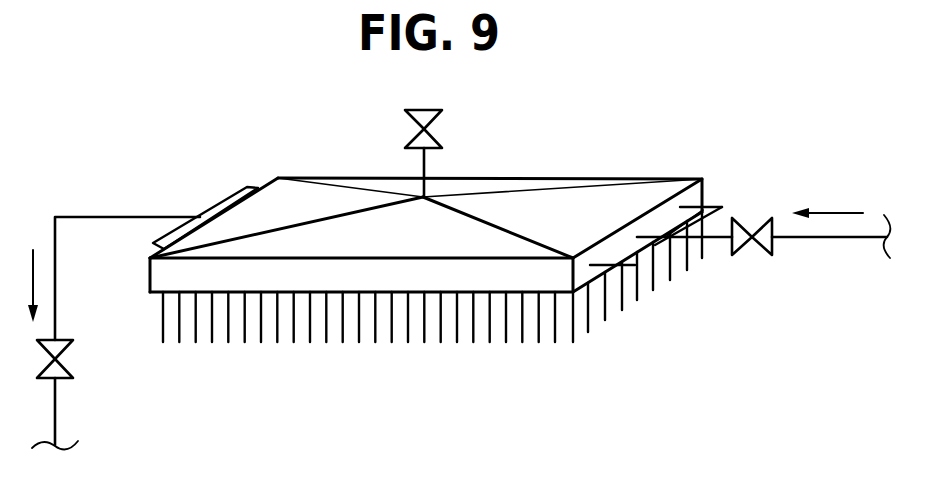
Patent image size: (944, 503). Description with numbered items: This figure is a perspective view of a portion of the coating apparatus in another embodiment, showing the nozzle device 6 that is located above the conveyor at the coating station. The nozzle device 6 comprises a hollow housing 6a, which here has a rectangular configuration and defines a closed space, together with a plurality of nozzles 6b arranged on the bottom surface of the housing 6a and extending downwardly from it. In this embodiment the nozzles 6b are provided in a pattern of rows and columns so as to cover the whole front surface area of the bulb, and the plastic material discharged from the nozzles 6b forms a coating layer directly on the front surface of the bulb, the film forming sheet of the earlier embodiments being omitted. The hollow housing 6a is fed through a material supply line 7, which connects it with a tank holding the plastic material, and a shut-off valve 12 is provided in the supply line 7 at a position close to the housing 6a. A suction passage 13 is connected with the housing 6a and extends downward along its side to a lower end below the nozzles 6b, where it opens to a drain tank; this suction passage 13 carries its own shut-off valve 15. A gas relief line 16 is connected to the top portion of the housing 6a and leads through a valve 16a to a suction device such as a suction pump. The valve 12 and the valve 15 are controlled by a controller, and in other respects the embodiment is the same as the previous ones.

The nozzle device 6 is at (577, 161).
The hollow housing 6a is at (300, 195).
The nozzles 6b is at (263, 325).
The material supply line 7 is at (825, 238).
The shut-off valve 12 is at (758, 222).
The suction passage 13 is at (110, 216).
The shut-off valve 15 is at (62, 362).
The gas relief line 16 is at (421, 167).
The valve 16a is at (432, 124).